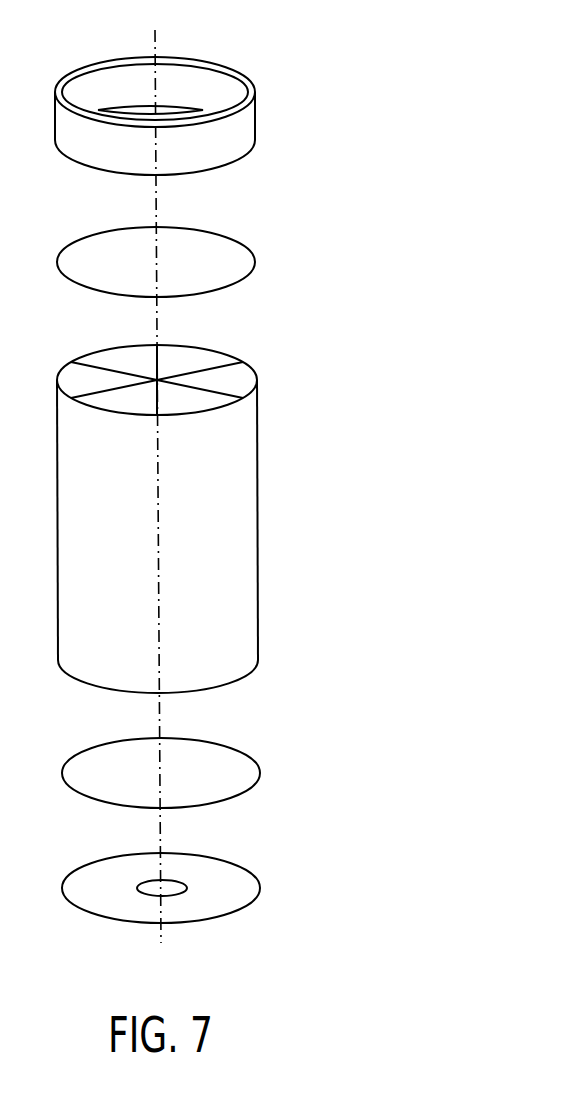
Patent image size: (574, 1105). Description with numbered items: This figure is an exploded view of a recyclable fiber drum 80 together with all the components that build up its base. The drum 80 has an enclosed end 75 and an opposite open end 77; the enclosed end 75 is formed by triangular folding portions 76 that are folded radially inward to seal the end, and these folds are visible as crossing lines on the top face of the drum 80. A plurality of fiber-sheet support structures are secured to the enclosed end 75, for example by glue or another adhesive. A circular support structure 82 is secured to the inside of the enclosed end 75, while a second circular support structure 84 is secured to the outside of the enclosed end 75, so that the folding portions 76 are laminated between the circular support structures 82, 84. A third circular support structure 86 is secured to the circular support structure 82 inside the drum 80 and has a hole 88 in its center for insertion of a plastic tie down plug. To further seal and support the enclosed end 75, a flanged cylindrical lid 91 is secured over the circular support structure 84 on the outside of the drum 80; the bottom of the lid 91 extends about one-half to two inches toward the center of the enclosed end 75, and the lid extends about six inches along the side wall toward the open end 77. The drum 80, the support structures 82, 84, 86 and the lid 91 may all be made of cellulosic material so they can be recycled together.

The flanged cylindrical lid 91 is at (255, 115).
The second circular support structure 84 is at (255, 262).
The folding portions 76 is at (122, 355).
The enclosed end 75 is at (238, 378).
The fiber drum 80 is at (175, 514).
The open end 77 is at (246, 682).
The circular support structure 82 is at (260, 773).
The hole 88 is at (163, 887).
The third circular support structure 86 is at (193, 868).